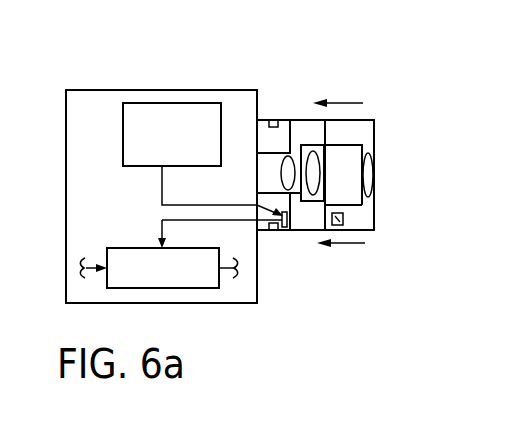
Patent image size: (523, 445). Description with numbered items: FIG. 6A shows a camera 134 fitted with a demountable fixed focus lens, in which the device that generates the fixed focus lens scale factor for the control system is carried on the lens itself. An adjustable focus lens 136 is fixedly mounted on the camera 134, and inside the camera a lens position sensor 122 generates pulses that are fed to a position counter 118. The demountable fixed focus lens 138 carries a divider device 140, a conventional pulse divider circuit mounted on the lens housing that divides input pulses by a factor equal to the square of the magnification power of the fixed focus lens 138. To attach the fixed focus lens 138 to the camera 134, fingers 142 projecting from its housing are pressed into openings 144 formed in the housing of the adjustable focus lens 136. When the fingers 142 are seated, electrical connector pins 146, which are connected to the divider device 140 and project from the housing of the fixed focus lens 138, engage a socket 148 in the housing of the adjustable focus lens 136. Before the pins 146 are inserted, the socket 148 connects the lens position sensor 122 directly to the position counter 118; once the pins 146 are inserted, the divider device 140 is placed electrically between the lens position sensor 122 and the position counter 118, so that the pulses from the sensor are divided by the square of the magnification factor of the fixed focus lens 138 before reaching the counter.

The position counter 118 is at (116, 286).
The lens position sensor 122 is at (208, 112).
The camera 134 is at (118, 96).
The adjustable focus lens 136 is at (268, 118).
The fixed focus lens 138 is at (365, 130).
The divider device 140 is at (343, 219).
The fingers 142 is at (302, 123).
The openings 144 is at (278, 118).
The electrical connector pins 146 is at (316, 222).
The socket 148 is at (287, 227).